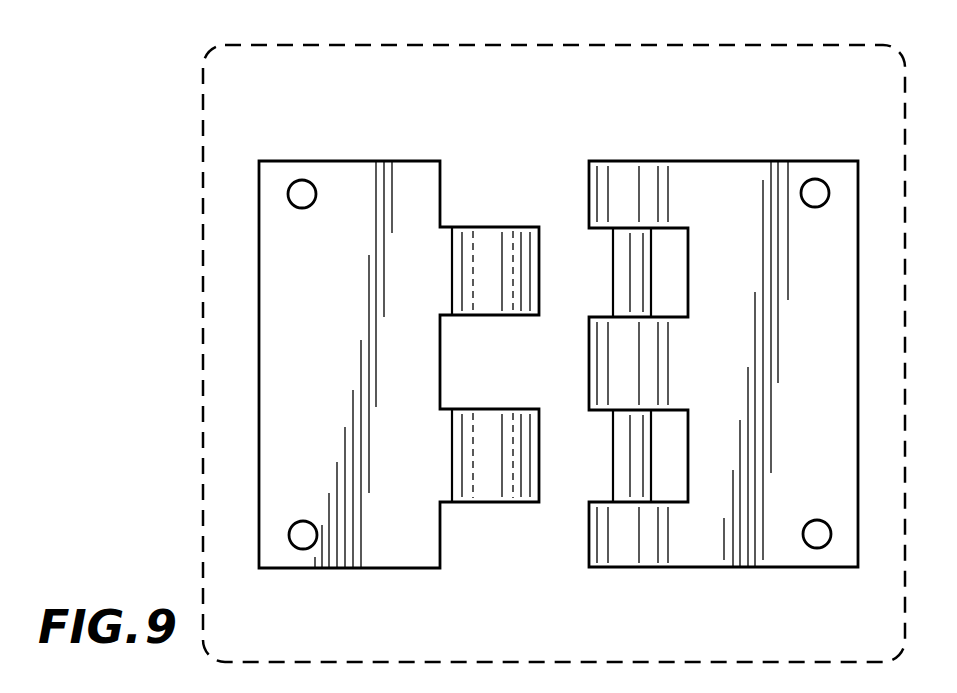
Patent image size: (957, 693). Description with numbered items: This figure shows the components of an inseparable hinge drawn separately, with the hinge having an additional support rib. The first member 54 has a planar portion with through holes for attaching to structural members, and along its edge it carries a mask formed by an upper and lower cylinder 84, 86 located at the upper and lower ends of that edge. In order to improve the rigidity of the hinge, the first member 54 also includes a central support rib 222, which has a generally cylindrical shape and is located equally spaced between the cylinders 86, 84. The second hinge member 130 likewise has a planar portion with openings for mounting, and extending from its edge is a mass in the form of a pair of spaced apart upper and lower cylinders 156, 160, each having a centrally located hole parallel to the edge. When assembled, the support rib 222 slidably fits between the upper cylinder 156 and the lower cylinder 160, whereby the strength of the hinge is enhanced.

The first member 54 is at (787, 138).
The second hinge leaf 130 is at (337, 139).
The cylinder 84 is at (623, 167).
The cylinder 86 is at (627, 568).
The upper cylinder 156 is at (459, 227).
The lower cylinder 160 is at (461, 504).
The central support rib 222 is at (589, 397).